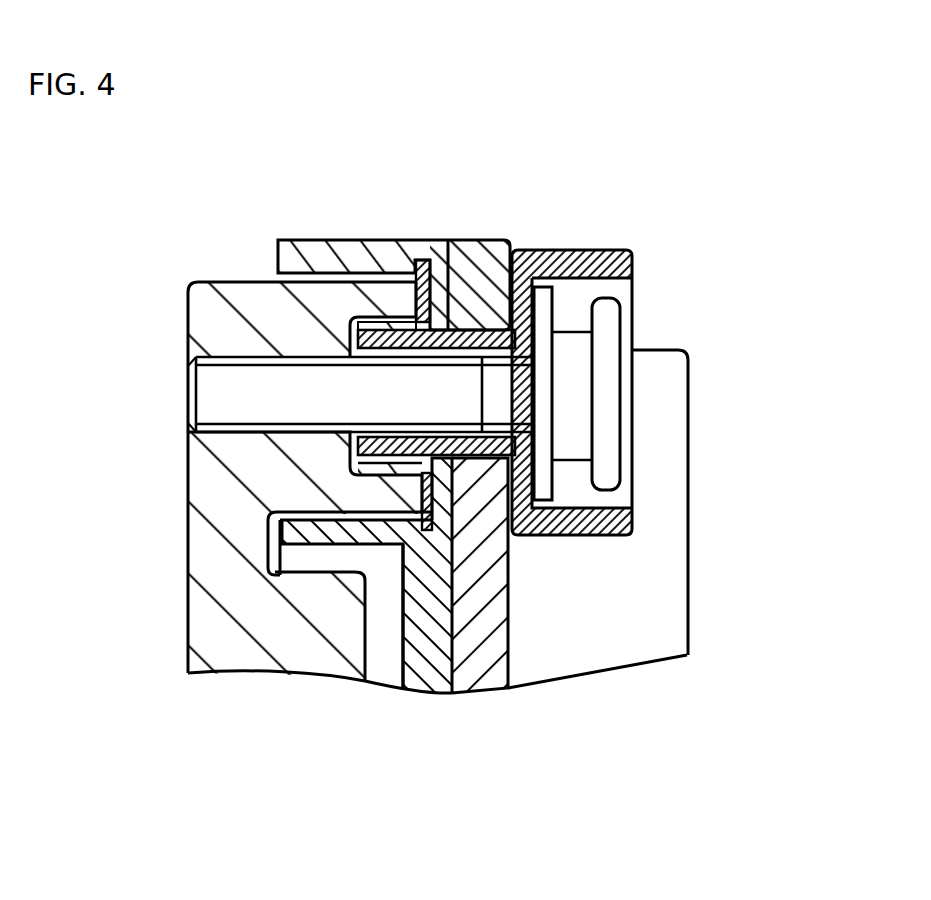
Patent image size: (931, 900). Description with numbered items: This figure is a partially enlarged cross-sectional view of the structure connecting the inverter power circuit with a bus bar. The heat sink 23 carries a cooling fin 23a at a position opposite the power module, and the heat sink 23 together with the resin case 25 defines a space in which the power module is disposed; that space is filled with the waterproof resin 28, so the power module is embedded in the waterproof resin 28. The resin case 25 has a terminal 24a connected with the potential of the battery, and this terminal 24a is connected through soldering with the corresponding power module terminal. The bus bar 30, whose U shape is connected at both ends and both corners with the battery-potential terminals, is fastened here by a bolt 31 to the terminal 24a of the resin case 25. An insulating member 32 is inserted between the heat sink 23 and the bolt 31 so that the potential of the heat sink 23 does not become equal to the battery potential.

The heat sink 23 is at (488, 637).
The cooling fin 23a is at (662, 487).
The terminal 24a is at (408, 238).
The resin case 25 is at (440, 627).
The waterproof resin 28 is at (340, 557).
The bus bar 30 is at (212, 528).
The bolt 31 is at (568, 377).
The insulating member 32 is at (582, 248).